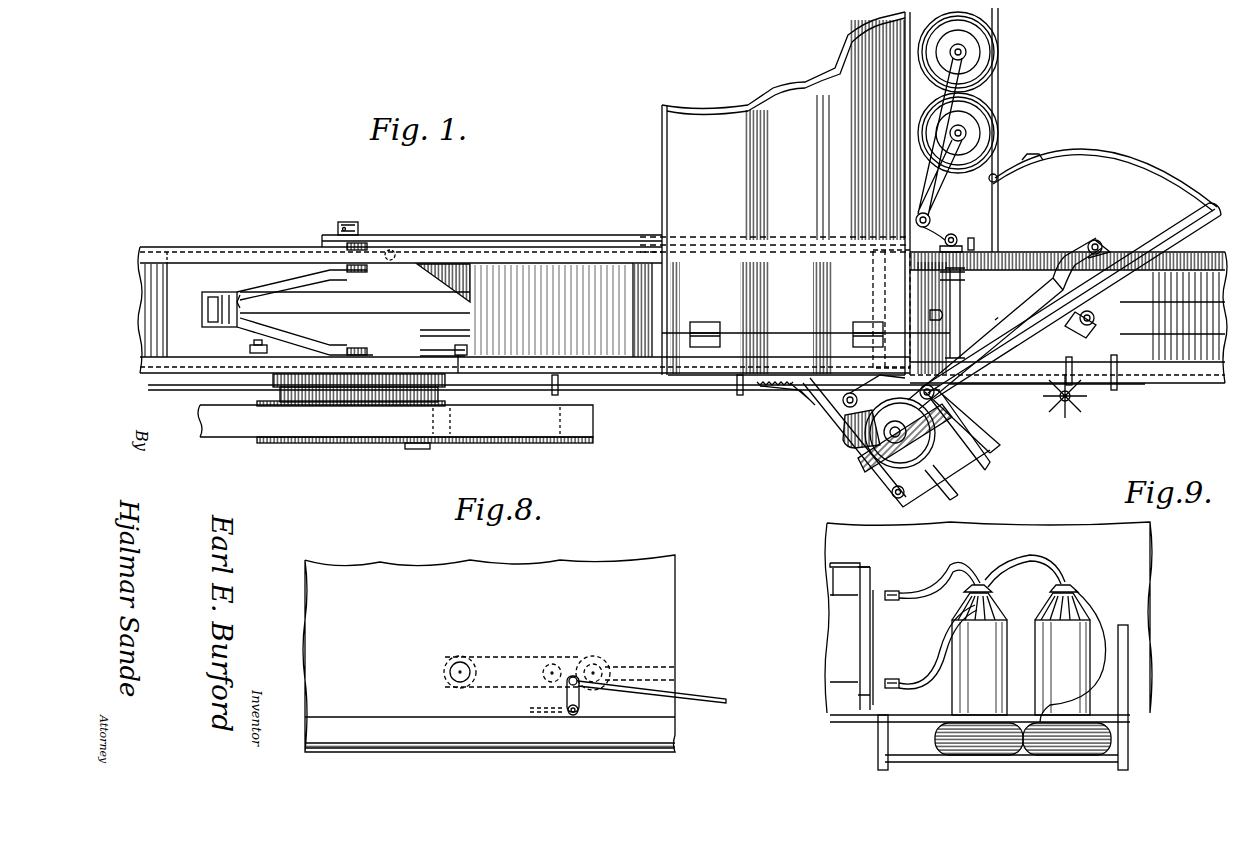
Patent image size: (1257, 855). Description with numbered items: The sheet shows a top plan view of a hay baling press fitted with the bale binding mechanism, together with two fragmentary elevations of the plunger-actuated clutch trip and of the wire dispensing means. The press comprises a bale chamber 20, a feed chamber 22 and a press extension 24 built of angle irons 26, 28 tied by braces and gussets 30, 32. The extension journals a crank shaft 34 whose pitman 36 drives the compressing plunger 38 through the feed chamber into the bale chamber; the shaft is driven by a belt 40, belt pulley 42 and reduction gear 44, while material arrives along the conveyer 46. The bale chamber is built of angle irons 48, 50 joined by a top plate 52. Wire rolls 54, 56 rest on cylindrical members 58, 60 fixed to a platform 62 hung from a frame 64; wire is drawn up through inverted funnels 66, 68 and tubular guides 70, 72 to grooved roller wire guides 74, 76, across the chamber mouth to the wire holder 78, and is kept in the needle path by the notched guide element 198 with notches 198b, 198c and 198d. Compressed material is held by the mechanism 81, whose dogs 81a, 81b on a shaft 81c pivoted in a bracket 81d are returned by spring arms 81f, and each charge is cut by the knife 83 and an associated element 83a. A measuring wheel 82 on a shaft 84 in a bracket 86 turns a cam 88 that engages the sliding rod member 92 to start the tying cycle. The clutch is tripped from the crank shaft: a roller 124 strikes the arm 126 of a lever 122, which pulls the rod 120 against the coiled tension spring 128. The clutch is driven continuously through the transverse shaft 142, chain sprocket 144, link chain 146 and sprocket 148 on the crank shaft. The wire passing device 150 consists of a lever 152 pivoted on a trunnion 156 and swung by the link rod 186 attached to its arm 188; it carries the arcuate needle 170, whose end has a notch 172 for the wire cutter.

In FIG. 1, the bale chamber 20 is at (1041, 241).
In FIG. 1, the feed chamber 22 is at (647, 166).
In FIG. 1, the press extension 24 is at (255, 243).
In FIG. 1, the upper angle iron 26 is at (196, 238).
In FIG. 1, the upper angle iron 28 is at (197, 371).
In FIG. 1, the brace 30 is at (149, 297).
In FIG. 1, the gusset plate 32 is at (646, 262).
In FIG. 1, the crank shaft 34 is at (240, 296).
In FIG. 8, the crank shaft 34 is at (483, 657).
In FIG. 1, the pitman 36 is at (374, 311).
In FIG. 1, the compressing plunger 38 is at (460, 333).
In FIG. 1, the belt 40 is at (232, 426).
In FIG. 1, the belt pulley 42 is at (278, 440).
In FIG. 1, the reduction gear 44 is at (272, 387).
In FIG. 1, the conveyer 46 is at (741, 107).
In FIG. 1, the upper angle iron of bale chamber 48 is at (1208, 256).
In FIG. 9, the upper angle iron of bale chamber 48 is at (848, 563).
In FIG. 1, the upper angle iron of bale chamber 50 is at (1218, 376).
In FIG. 1, the top plate 52 is at (1190, 372).
In FIG. 9, the top plate 52 is at (840, 580).
In FIG. 1, the roll of wire 54 is at (1000, 52).
In FIG. 9, the roll of wire 54 is at (1075, 740).
In FIG. 1, the roll of wire 56 is at (1000, 130).
In FIG. 9, the roll of wire 56 is at (945, 740).
In FIG. 9, the cylindrical member 58 is at (960, 663).
In FIG. 9, the cylindrical member 60 is at (1080, 640).
In FIG. 9, the platform 62 is at (1005, 757).
In FIG. 9, the frame 64 is at (866, 720).
In FIG. 9, the inverted funnel shaped member 66 is at (970, 585).
In FIG. 9, the inverted funnel shaped member 68 is at (1070, 585).
In FIG. 9, the tubular guide 70 is at (933, 564).
In FIG. 9, the tubular guide 72 is at (1018, 549).
In FIG. 1, the wire guide 74 is at (935, 224).
In FIG. 9, the wire guide 74 is at (892, 590).
In FIG. 9, the wire guide 76 is at (892, 680).
In FIG. 1, the wire holder 78 is at (920, 491).
In FIG. 1, the compression holding mechanism 81 is at (956, 301).
In FIG. 1, the dog 81a is at (962, 281).
In FIG. 1, the dog 81b is at (962, 316).
In FIG. 1, the dog shaft 81c is at (953, 240).
In FIG. 1, the bracket 81d is at (982, 250).
In FIG. 1, the pressure spring arm 81f is at (930, 315).
In FIG. 1, the measuring wheel 82 is at (1055, 407).
In FIG. 1, the knife element 83 is at (880, 276).
In FIG. 1, the control rod 83a is at (640, 291).
In FIG. 1, the measuring wheel shaft 84 is at (1062, 417).
In FIG. 1, the bracket 86 is at (1073, 375).
In FIG. 1, the cam 88 is at (1090, 401).
In FIG. 1, the rod member 92 is at (1032, 372).
In FIG. 1, the rod 120 is at (694, 391).
In FIG. 8, the rod 120 is at (708, 695).
In FIG. 1, the lever 122 is at (466, 351).
In FIG. 8, the lever 122 is at (580, 695).
In FIG. 1, the roller 124 is at (248, 350).
In FIG. 8, the roller 124 is at (556, 668).
In FIG. 1, the lever arm 126 is at (425, 352).
In FIG. 8, the lever arm 126 is at (550, 712).
In FIG. 1, the coiled tension spring 128 is at (788, 396).
In FIG. 1, the transverse shaft 142 is at (886, 297).
In FIG. 1, the chain sprocket 144 is at (888, 262).
In FIG. 1, the link chain 146 is at (565, 221).
In FIG. 1, the sprocket 148 is at (341, 228).
In FIG. 1, the wire passing device 150 is at (1183, 173).
In FIG. 1, the lever 152 is at (1180, 224).
In FIG. 1, the trunnion 156 is at (1098, 322).
In FIG. 1, the arcuate wire passing member 170 is at (1124, 152).
In FIG. 1, the longitudinal notch 172 is at (998, 181).
In FIG. 1, the link rod 186 is at (1035, 280).
In FIG. 1, the arm 188 is at (1118, 233).
In FIG. 1, the guide element 198 is at (977, 243).
In FIG. 9, the guide element 198 is at (878, 612).
In FIG. 9, the notch 198b is at (893, 612).
In FIG. 9, the notch 198c is at (870, 682).
In FIG. 9, the conduit branch 198d is at (873, 636).